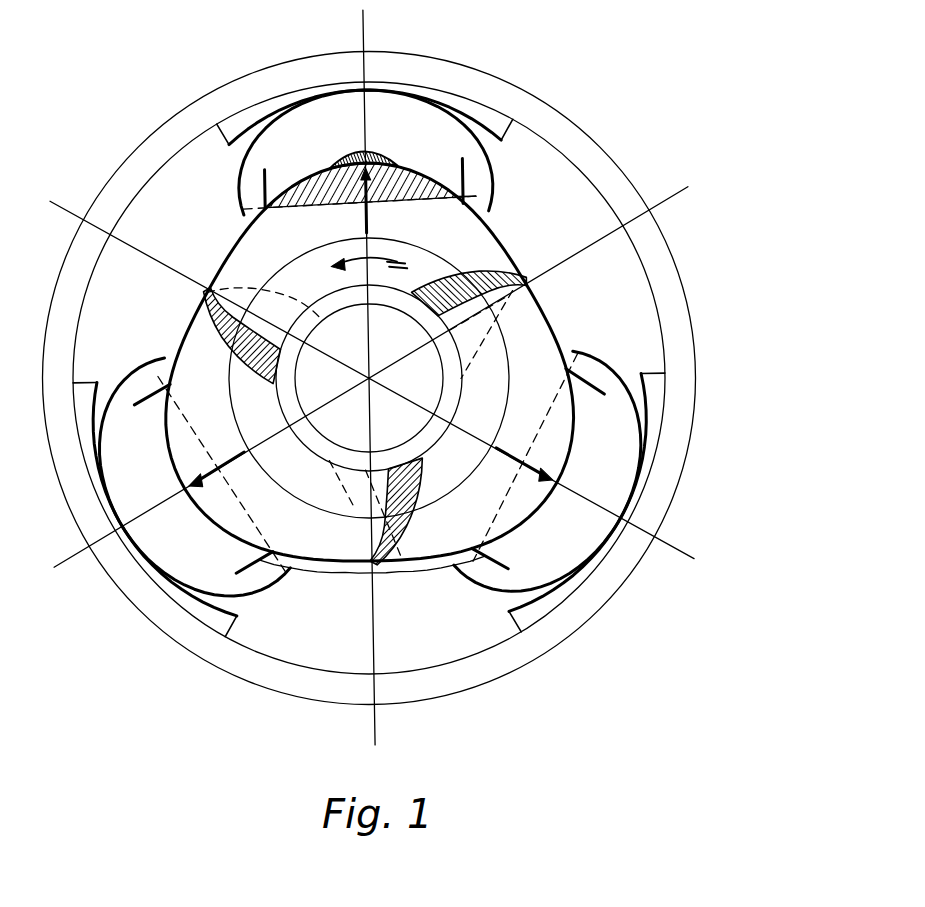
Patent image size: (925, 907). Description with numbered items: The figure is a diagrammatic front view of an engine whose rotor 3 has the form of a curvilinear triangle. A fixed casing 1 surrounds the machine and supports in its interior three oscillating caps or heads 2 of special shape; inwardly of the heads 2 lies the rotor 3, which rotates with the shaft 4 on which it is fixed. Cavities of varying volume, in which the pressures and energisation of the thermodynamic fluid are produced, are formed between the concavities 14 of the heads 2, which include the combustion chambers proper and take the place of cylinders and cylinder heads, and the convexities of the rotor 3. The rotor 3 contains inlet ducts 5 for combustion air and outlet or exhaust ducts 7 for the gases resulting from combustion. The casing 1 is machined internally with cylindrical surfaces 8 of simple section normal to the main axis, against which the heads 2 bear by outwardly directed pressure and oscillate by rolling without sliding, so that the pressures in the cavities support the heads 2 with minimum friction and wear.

The fixed casing 1 is at (565, 138).
The oscillating heads 2 is at (318, 112).
The rotor 3 is at (425, 540).
The shaft 4 is at (348, 345).
The inlet ducts 5 is at (500, 273).
The outlet or exhaust ducts 7 is at (350, 505).
The cylindrical surfaces 8 is at (487, 113).
The concavities 14 is at (430, 177).